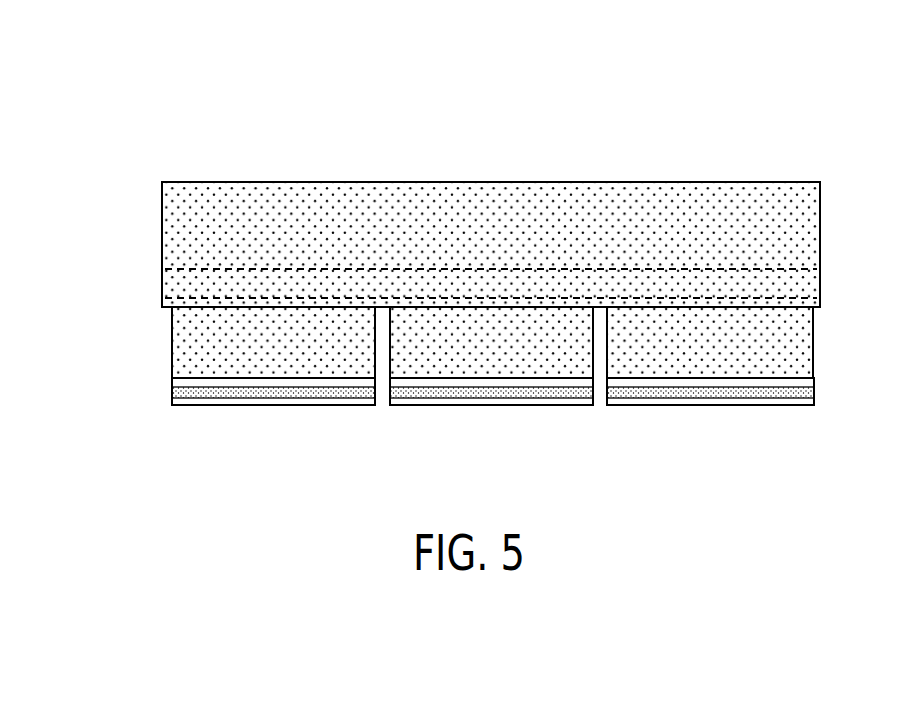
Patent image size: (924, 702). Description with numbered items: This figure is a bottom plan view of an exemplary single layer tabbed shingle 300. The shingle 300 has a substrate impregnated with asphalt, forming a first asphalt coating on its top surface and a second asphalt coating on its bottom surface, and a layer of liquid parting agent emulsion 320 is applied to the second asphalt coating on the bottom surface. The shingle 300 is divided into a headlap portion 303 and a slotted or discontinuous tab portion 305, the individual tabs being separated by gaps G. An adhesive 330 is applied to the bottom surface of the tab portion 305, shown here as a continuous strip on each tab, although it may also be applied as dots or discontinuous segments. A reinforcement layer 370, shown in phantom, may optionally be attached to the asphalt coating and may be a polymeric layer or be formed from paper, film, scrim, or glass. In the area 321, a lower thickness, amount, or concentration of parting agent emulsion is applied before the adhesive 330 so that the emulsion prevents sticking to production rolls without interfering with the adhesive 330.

The single layer tabbed shingle 300 is at (210, 122).
The headlap portion 303 is at (158, 183).
The tab portion 305 is at (158, 307).
The layer of liquid parting agent emulsion 320 is at (612, 203).
The reinforcement layer 370 is at (808, 268).
The gap G is at (381, 380).
The area 321 is at (815, 380).
The adhesive 330 is at (277, 400).